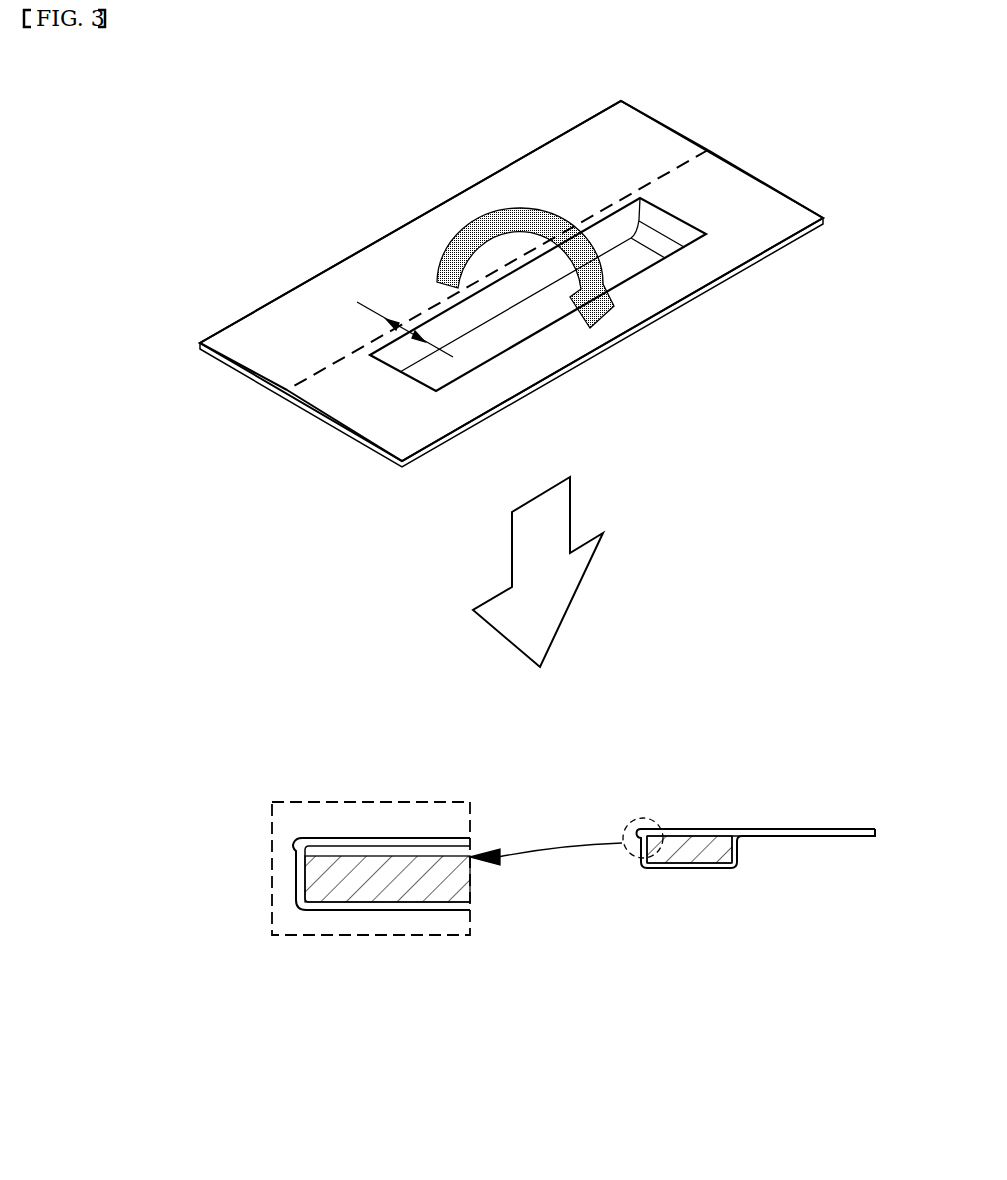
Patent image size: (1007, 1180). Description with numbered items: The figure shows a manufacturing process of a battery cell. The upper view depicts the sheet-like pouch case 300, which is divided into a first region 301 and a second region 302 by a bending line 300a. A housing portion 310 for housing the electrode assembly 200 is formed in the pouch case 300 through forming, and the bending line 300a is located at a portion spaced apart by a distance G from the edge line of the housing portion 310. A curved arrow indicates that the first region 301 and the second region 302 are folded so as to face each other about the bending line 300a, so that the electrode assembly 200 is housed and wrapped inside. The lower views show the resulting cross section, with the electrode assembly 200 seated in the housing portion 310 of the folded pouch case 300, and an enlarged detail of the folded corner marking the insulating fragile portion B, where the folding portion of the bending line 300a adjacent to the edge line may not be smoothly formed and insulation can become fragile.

The pouch case 300 is at (763, 203).
The bending line 300a is at (668, 170).
The first region 301 is at (268, 355).
The second region 302 is at (378, 418).
The housing portion 310 is at (625, 262).
The electrode assembly 200 is at (380, 865).
The spacing from edge line G is at (405, 319).
The insulating fragile portion B is at (295, 851).